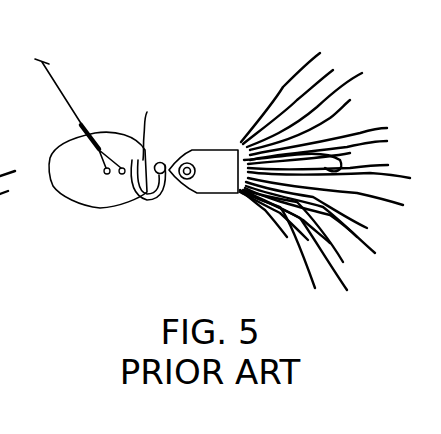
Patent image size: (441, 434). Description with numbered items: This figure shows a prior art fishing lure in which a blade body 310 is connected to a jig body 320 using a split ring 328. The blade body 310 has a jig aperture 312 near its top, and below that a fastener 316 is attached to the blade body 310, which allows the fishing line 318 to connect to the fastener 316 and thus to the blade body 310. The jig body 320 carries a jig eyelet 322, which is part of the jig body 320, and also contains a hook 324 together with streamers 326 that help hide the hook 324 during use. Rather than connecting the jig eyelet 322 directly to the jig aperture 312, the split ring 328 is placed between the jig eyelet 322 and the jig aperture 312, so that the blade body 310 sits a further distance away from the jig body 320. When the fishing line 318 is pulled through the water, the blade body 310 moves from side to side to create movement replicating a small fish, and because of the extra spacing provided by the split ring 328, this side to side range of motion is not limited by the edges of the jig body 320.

The blade body 310 is at (87, 203).
The jig aperture 312 is at (147, 112).
The fastener 316 is at (87, 122).
The fishing line 318 is at (60, 62).
The jig body 320 is at (217, 194).
The jig eyelet 322 is at (186, 150).
The hook 324 is at (0, 137).
The streamers 326 is at (356, 103).
The split ring 328 is at (152, 201).